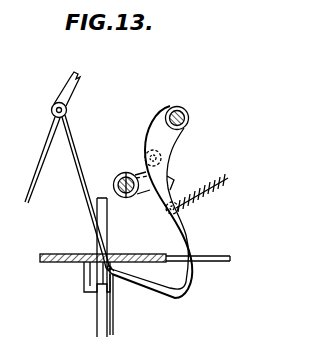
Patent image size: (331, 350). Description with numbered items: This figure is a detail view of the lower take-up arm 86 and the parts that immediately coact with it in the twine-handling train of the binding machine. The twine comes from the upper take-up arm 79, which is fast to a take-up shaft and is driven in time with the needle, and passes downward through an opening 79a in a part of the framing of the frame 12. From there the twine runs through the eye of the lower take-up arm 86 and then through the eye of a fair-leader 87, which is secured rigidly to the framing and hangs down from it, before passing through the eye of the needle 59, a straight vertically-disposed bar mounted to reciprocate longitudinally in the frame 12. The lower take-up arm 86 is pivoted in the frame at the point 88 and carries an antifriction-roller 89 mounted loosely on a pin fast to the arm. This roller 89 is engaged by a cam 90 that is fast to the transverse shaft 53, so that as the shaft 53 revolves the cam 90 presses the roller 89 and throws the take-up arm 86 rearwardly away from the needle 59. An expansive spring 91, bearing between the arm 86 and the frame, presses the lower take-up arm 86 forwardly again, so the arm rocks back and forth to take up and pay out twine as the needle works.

The frame 12 is at (58, 254).
The shaft 53 is at (116, 175).
The needle 59 is at (87, 267).
The upper take-up arm 79 is at (73, 93).
The opening 79a is at (108, 254).
The lower take-up arm 86 is at (192, 238).
The fair-leader 87 is at (84, 276).
The pivot point 88 is at (186, 110).
The antifriction-roller 89 is at (173, 158).
The cam 90 is at (142, 196).
The expansive spring 91 is at (228, 182).